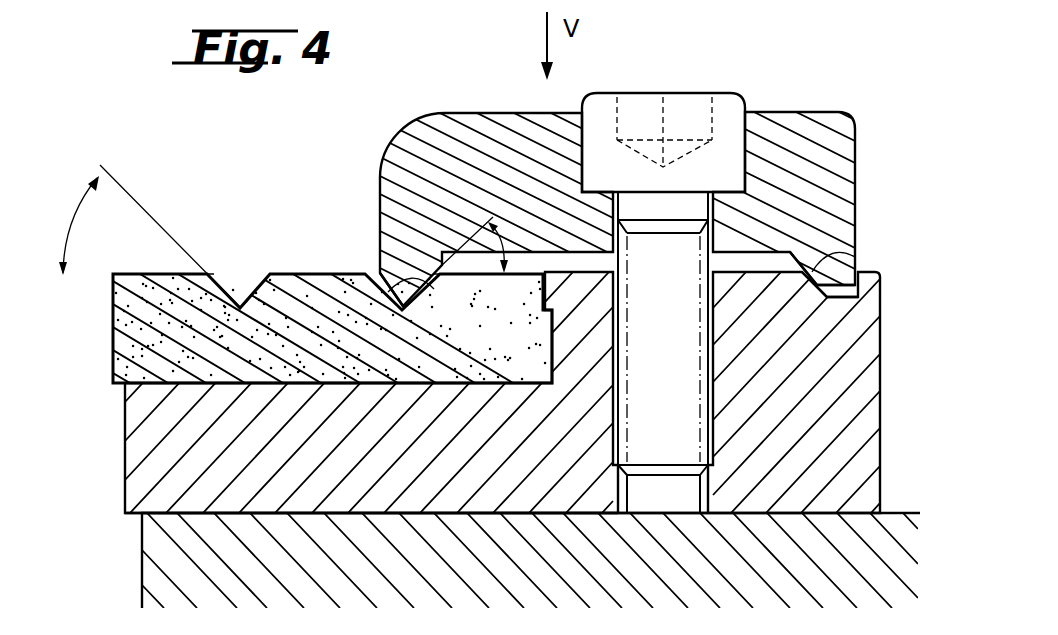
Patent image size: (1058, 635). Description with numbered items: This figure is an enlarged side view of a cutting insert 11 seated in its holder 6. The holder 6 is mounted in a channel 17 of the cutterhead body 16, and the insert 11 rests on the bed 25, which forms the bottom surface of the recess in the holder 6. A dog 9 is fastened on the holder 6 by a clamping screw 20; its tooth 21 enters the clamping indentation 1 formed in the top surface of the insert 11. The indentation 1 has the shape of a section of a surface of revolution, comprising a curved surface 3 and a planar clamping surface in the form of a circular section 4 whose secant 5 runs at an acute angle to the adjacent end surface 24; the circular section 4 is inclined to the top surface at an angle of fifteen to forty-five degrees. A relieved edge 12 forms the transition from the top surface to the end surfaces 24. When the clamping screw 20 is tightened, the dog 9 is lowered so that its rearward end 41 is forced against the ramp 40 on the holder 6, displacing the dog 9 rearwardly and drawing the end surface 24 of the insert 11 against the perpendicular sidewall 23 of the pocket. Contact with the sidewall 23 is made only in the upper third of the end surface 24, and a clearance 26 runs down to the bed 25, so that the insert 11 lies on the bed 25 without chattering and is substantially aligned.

The clamping indentation 1 is at (236, 263).
The curved surface 3 is at (253, 283).
The circular section 4 is at (224, 286).
The secant 5 is at (210, 273).
The holder 6 is at (138, 448).
The dog 9 is at (462, 137).
The cutting insert 11 is at (163, 265).
The relieved edge 12 is at (116, 274).
The body 16 is at (152, 542).
The channel 17 is at (160, 500).
The clamping screw 20 is at (687, 100).
The tooth 21 is at (392, 293).
The sidewall 23 is at (531, 272).
The end surface 24 is at (113, 325).
The bed 25 is at (389, 386).
The clearance 26 is at (556, 350).
The ramp 40 is at (840, 253).
The rearward end 41 is at (837, 300).